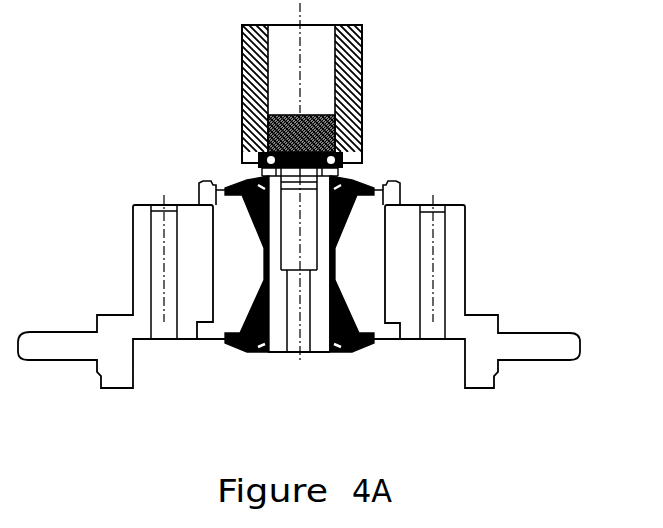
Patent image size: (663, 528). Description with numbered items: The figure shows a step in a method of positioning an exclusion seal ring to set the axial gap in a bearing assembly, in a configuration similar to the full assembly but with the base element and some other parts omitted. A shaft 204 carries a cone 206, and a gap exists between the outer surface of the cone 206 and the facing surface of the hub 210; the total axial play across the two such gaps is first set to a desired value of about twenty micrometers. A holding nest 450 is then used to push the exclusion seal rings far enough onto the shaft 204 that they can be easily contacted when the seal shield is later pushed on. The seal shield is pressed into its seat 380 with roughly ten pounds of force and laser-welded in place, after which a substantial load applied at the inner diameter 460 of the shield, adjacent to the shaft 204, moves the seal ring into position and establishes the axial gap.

The holding nest 450 is at (358, 65).
The inner diameter of the shield 460 is at (267, 163).
The seat 380 is at (352, 220).
The shaft 204 is at (418, 207).
The cone 206 is at (353, 315).
The hub 210 is at (358, 293).